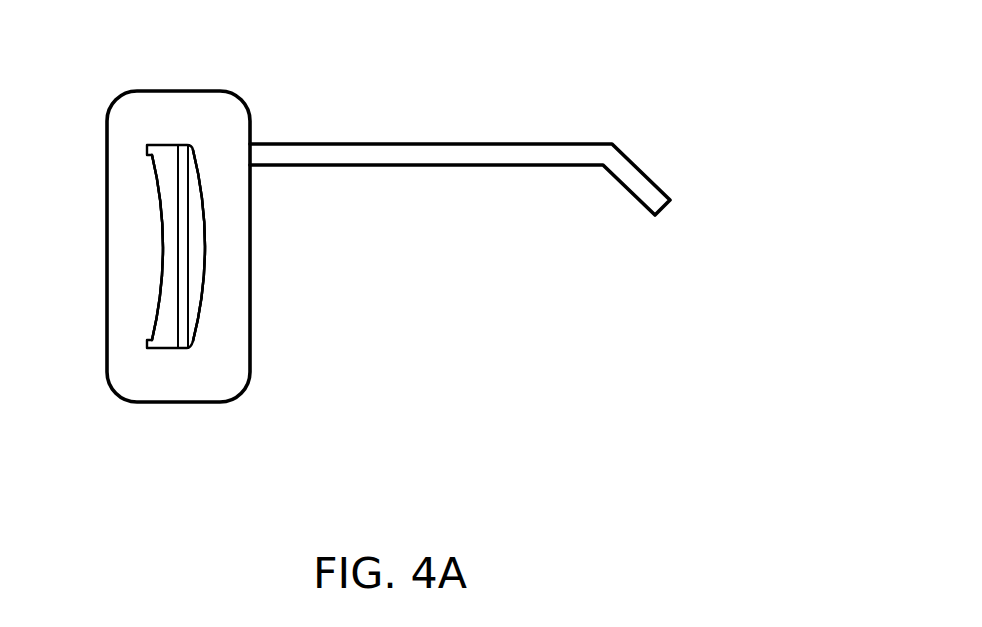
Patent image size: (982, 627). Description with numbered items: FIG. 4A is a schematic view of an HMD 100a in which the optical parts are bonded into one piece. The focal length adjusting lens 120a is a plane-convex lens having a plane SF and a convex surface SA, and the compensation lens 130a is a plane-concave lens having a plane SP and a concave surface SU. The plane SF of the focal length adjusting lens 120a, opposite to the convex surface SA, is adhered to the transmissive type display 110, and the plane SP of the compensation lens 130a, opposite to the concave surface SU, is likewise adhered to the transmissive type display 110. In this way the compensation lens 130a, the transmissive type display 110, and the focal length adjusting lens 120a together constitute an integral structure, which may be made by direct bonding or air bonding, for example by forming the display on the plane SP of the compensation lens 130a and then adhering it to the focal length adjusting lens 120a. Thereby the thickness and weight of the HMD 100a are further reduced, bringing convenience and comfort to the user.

The HMD 100a is at (730, 457).
The transmissive type display 110 is at (188, 334).
The focal length adjusting lens 120a is at (195, 318).
The compensation lens 130a is at (166, 326).
The concave surface SU is at (152, 164).
The plane SF is at (173, 166).
The convex surface SA is at (202, 167).
The plane SP is at (177, 231).